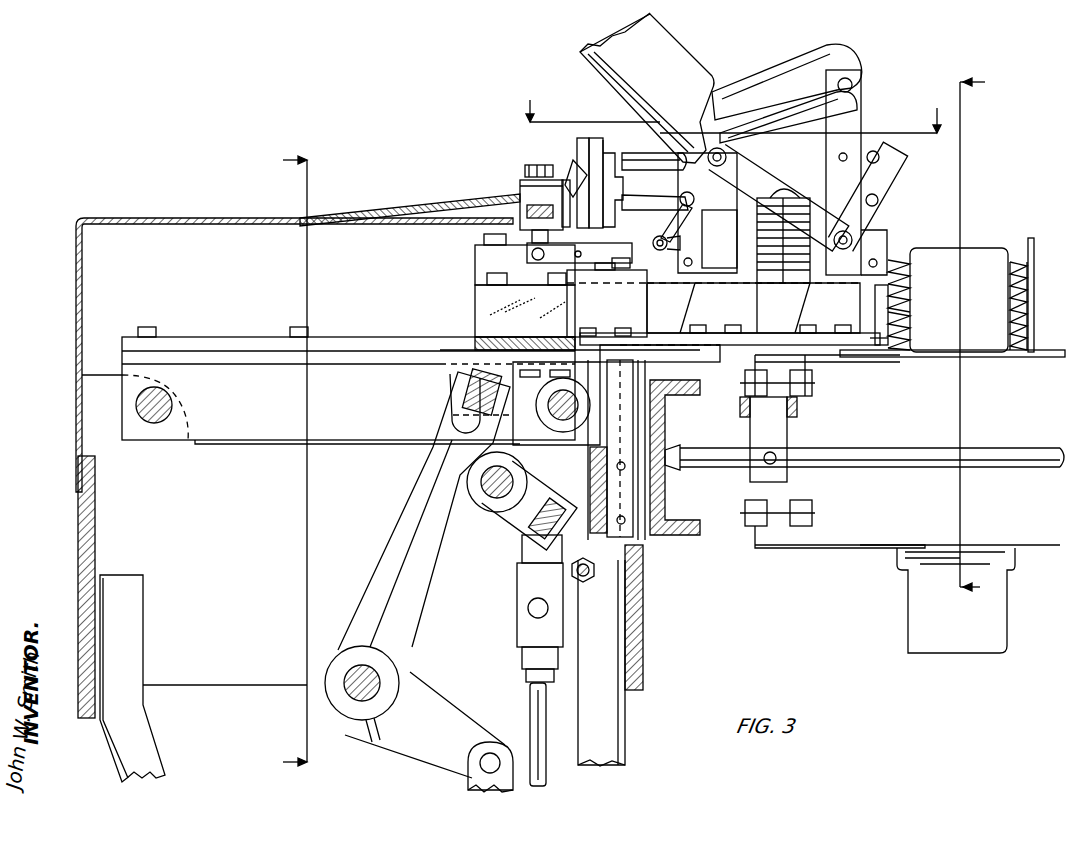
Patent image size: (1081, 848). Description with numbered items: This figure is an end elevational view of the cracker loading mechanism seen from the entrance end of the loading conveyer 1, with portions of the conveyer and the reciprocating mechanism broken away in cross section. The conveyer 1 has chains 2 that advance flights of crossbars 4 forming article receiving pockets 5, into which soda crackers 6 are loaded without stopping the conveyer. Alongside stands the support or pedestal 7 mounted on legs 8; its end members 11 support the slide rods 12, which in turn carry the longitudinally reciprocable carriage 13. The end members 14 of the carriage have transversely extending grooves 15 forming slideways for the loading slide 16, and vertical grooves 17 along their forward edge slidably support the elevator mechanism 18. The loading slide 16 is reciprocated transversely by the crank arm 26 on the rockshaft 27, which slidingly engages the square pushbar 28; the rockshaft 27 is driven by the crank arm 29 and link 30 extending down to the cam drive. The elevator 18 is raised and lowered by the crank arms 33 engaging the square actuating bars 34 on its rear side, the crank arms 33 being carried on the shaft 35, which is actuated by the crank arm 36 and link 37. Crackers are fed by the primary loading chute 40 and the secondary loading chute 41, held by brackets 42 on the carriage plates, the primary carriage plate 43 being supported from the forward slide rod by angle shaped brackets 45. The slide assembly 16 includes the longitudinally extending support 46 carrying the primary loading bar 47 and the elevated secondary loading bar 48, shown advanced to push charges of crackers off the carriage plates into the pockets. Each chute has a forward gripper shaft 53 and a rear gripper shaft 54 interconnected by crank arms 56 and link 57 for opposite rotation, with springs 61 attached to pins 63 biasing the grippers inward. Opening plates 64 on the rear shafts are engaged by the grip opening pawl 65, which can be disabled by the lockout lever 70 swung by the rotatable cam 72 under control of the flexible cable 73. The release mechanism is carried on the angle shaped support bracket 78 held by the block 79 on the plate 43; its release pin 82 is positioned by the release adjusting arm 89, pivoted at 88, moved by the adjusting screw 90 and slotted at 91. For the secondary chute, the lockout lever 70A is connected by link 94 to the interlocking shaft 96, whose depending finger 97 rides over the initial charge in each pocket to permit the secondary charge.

The loading conveyer 1 is at (745, 535).
The chains 2 is at (800, 385).
The crossbars 4 is at (880, 365).
The article receiving pockets 5 is at (1010, 248).
The soda crackers 6 is at (1028, 288).
The support or pedestal 7 is at (84, 578).
The legs 8 is at (145, 752).
The end members of the pedestal 11 is at (92, 403).
The slide rods 12 is at (172, 405).
The carriage 13 is at (180, 338).
The end members of the carriage 14 is at (255, 372).
The transversely extending grooves 15 is at (218, 356).
The loading slide 16 is at (470, 340).
The vertical grooves 17 is at (633, 418).
The elevator mechanism 18 is at (633, 495).
The crank arm 26 is at (385, 568).
The rockshaft 27 is at (345, 673).
The square pushbar 28 is at (465, 395).
The crank arm 29 is at (418, 740).
The link 30 is at (472, 762).
The crank arms 33 is at (545, 512).
The square actuating bars 34 is at (548, 535).
The shaft 35 is at (478, 480).
The crank arm 36 is at (575, 576).
The link 37 is at (532, 716).
The primary loading chute 40 is at (850, 110).
The secondary loading chute 41 is at (845, 56).
The brackets 42 is at (825, 342).
The primary carriage plate 43 is at (905, 336).
The angle shaped brackets 45 is at (702, 362).
The longitudinally extending support 46 is at (445, 352).
The primary loading bar 47 is at (483, 295).
The secondary loading bar 48 is at (483, 262).
The forward gripper shaft 53 is at (880, 158).
The rear gripper shaft 54 is at (694, 205).
The crank arms 56 is at (728, 157).
The link 57 is at (780, 180).
The springs 61 is at (660, 250).
The pins 63 is at (676, 235).
The opening plates 64 is at (638, 152).
The grip opening pawl 65 is at (592, 186).
The lockout lever 70 is at (582, 193).
The lockout lever 70A is at (606, 140).
The rotatable cam 72 is at (530, 166).
The flexible cable 73 is at (420, 210).
The angle shaped support bracket 78 is at (635, 283).
The block 79 is at (745, 325).
The release pin 82 is at (620, 270).
The pivot 88 is at (580, 252).
The release adjusting arm 89 is at (552, 254).
The adjusting screw 90 is at (520, 182).
The slot 91 is at (604, 270).
The link 94 is at (590, 138).
The interlocking shaft 96 is at (905, 278).
The depending finger 97 is at (905, 302).